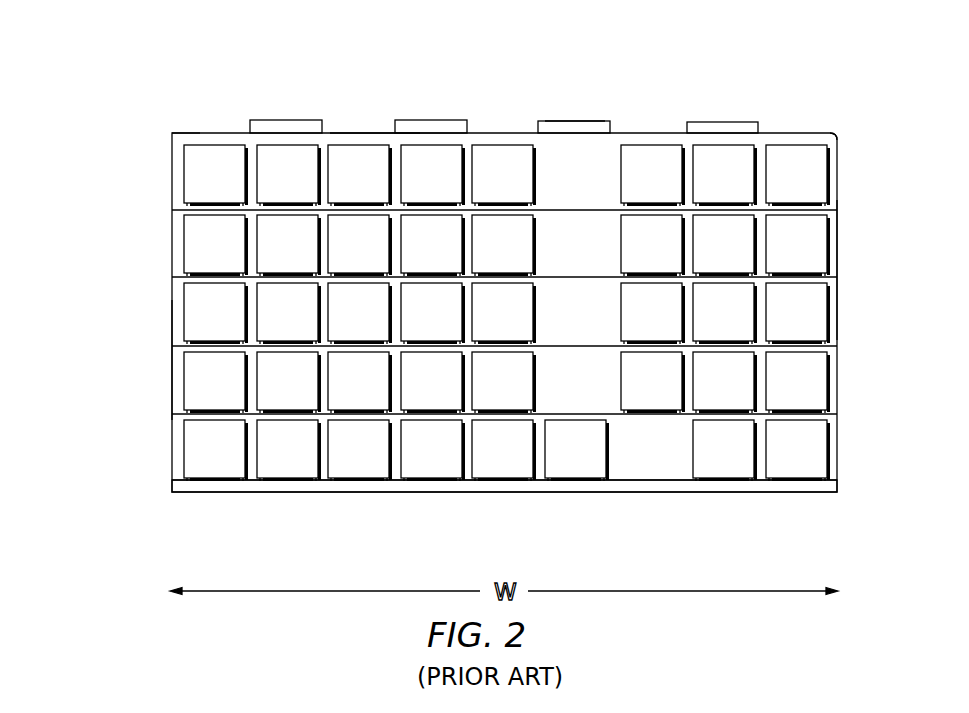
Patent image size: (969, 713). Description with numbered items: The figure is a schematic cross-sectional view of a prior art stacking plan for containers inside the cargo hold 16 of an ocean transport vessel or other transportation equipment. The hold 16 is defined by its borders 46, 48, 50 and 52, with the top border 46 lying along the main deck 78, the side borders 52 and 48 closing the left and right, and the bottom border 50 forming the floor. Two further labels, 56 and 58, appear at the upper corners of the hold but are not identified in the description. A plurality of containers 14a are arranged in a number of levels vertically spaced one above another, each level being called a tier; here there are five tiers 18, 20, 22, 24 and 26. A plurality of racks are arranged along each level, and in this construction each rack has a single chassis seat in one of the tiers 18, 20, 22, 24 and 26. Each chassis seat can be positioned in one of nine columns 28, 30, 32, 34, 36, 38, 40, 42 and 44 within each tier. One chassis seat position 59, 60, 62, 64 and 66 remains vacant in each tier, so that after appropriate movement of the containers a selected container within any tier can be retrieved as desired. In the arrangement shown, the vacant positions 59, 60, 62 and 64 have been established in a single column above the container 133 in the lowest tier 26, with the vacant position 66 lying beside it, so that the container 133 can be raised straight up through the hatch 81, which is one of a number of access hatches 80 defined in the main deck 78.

The main deck 78 is at (185, 93).
The first corner of housing 56 is at (172, 132).
The second corner of housing 58 is at (837, 133).
The border 46 is at (350, 132).
The border 52 is at (172, 338).
The border 48 is at (837, 267).
The border 50 is at (690, 493).
The container 14a is at (213, 480).
The access hatch 80 is at (282, 117).
The hatch 81 is at (583, 122).
The cargo hold 16 is at (596, 110).
The tier 18 is at (172, 168).
The tier 20 is at (172, 232).
The tier 22 is at (172, 295).
The tier 24 is at (172, 377).
The tier 26 is at (172, 440).
The column 28 is at (224, 140).
The column 30 is at (306, 142).
The column 32 is at (338, 142).
The column 34 is at (420, 142).
The column 36 is at (481, 142).
The column 38 is at (575, 140).
The column 40 is at (653, 142).
The column 42 is at (720, 148).
The column 44 is at (792, 148).
The vacant chassis seat position 59 is at (589, 197).
The vacant chassis seat position 60 is at (589, 257).
The vacant chassis seat position 62 is at (594, 323).
The vacant chassis seat position 64 is at (594, 393).
The vacant chassis seat position 66 is at (665, 457).
The container 133 is at (593, 462).